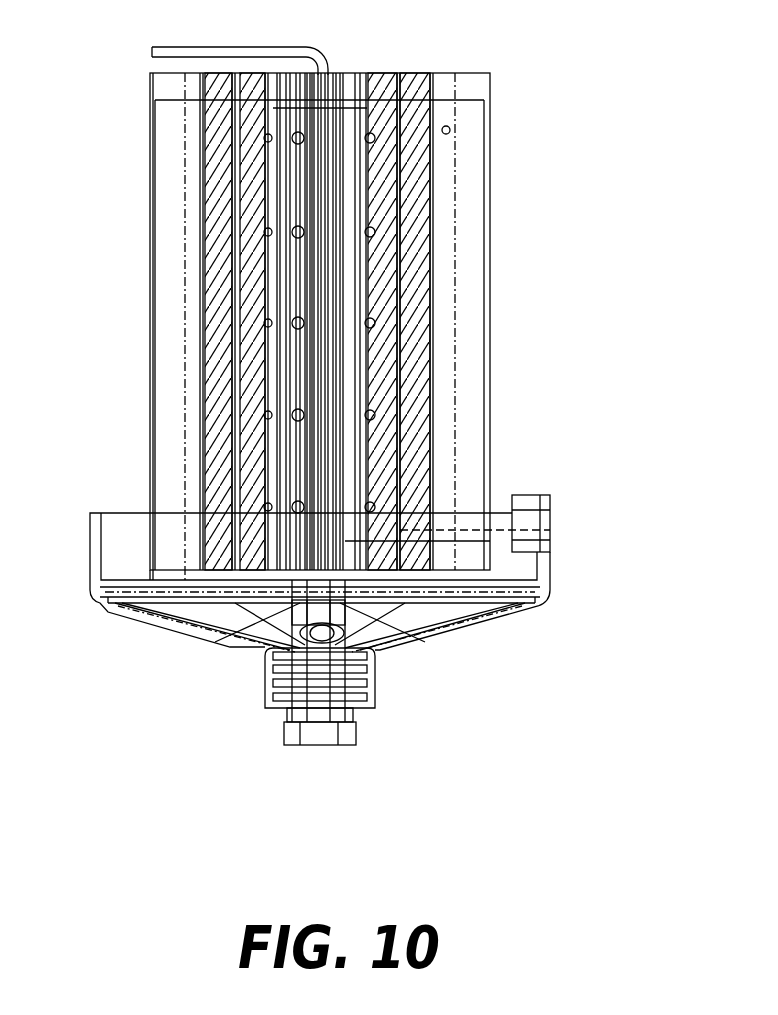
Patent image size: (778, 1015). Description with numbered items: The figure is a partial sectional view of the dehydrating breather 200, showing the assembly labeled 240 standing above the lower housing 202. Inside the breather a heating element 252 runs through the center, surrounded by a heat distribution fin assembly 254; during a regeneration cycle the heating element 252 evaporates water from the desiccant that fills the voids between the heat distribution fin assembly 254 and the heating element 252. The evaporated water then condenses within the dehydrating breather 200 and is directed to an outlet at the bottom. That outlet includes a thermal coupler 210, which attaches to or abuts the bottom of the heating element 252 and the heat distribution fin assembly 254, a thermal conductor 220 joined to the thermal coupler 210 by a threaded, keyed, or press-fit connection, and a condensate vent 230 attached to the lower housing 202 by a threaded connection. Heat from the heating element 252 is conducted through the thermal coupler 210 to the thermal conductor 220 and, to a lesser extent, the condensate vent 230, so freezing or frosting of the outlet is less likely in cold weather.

The dehydrating breather 200 is at (621, 108).
The lower housing 202 is at (145, 620).
The thermal coupler 210 is at (415, 637).
The thermal conductor 220 is at (347, 648).
The condensate vent 230 is at (285, 735).
The filter cartridge 240 is at (490, 322).
The heating element 252 is at (288, 163).
The heat distribution fin assembly 254 is at (385, 162).